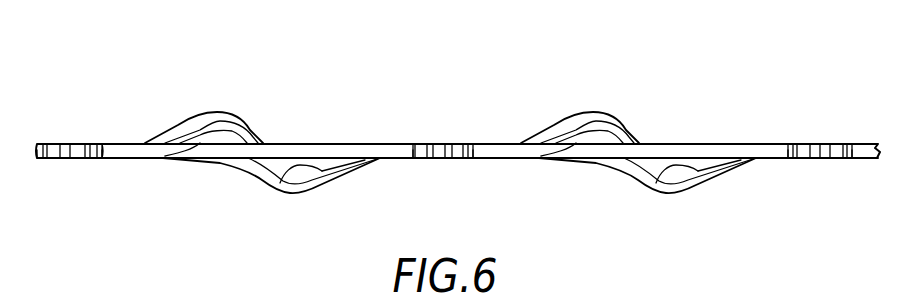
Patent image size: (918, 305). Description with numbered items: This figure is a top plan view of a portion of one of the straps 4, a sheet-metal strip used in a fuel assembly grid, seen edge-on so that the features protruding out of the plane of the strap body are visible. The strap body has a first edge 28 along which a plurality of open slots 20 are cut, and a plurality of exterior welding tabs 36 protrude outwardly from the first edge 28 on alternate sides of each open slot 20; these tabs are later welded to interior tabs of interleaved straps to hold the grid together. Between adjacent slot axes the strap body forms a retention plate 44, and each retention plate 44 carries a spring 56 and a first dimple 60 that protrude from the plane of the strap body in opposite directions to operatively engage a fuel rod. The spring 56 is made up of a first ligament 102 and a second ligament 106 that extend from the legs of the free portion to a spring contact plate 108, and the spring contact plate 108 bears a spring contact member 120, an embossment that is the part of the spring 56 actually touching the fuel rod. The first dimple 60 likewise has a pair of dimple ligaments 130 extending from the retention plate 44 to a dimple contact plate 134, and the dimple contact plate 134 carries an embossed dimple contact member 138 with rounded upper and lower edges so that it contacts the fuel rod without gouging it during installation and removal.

The strap 4 is at (458, 94).
The open slot 20 is at (80, 148).
The first edge 28 is at (330, 150).
The exterior welding tab 36 is at (38, 152).
The retention plate 44 is at (336, 119).
The spring 56 is at (246, 195).
The first dimple 60 is at (254, 109).
The first ligament 102 is at (222, 168).
The second ligament 106 is at (358, 170).
The spring contact plate 108 is at (287, 181).
The spring contact member 120 is at (318, 196).
The dimple ligament 130 is at (280, 121).
The dimple contact plate 134 is at (198, 151).
The dimple contact member 138 is at (190, 122).